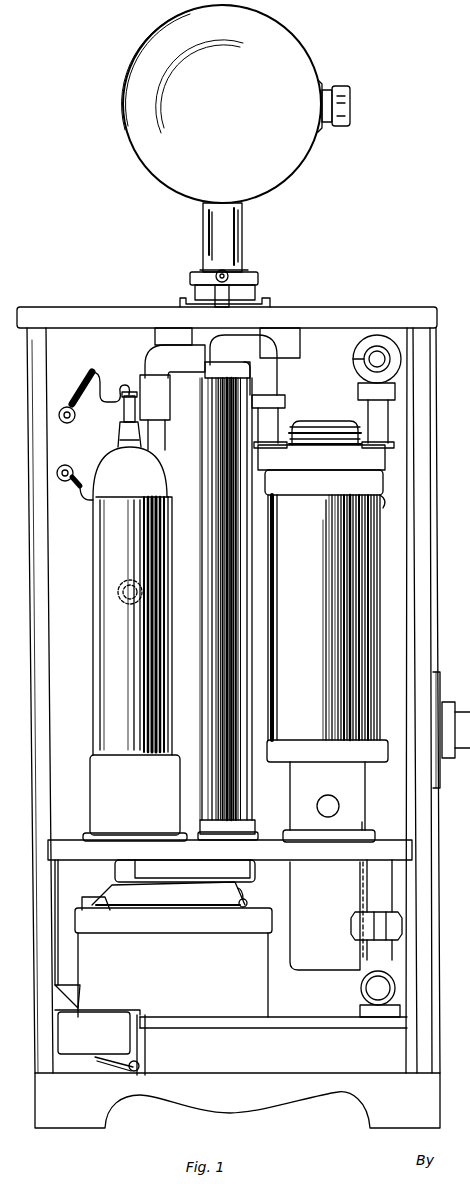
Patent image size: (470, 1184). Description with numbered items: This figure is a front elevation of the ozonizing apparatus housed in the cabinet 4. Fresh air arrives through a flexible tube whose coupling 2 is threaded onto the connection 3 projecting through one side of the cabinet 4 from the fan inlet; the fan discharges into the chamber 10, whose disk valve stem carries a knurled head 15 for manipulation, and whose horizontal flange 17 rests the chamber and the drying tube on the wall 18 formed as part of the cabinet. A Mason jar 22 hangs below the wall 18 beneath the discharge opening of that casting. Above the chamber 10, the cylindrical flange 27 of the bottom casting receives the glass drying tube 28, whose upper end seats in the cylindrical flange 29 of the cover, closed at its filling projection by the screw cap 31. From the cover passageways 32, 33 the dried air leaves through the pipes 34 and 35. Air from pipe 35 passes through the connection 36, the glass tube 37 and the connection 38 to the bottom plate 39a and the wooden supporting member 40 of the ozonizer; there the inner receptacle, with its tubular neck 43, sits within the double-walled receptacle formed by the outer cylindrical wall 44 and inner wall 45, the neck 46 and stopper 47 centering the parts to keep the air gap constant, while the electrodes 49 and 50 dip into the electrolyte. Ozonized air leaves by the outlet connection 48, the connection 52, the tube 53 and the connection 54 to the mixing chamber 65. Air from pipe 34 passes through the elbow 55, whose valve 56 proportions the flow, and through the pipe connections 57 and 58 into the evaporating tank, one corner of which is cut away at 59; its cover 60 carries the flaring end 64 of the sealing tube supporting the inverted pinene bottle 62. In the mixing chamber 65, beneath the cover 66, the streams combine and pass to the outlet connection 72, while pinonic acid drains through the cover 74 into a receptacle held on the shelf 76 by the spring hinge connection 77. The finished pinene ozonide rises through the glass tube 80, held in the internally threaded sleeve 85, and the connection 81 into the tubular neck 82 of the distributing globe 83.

The coupling 2 is at (456, 740).
The connection 3 is at (440, 692).
The cabinet 4 is at (436, 813).
The chamber 10 is at (329, 802).
The knurled head 15 is at (324, 804).
The horizontal flange 17 is at (361, 830).
The wall 18 is at (385, 840).
The Mason jar 22 is at (326, 916).
The cylindrical flange 27 is at (327, 751).
The drying tube 28 is at (324, 617).
The cylindrical flange 29 is at (390, 504).
The screw cap 31 is at (348, 420).
The passageway 32 is at (384, 462).
The passageway 33 is at (292, 468).
The pipe 34 is at (389, 418).
The pipe 35 is at (278, 418).
The connection 36 is at (262, 340).
The glass tube 37 is at (226, 529).
The connection 38 is at (158, 872).
The bottom plate 39a is at (153, 840).
The cylindrical supporting member 40 is at (135, 798).
The tubular neck 43 is at (136, 406).
The outer cylindrical wall 44 is at (99, 592).
The inner wall 45 is at (132, 601).
The neck 46 is at (118, 432).
The stopper 47 is at (135, 418).
The outlet connection 48 is at (166, 443).
The electrode 49 is at (102, 398).
The electrode 50 is at (78, 496).
The connection 52 is at (148, 362).
The tube 53 is at (213, 580).
The connection 54 is at (168, 893).
The elbow 55 is at (395, 390).
The valve 56 is at (385, 357).
The pipe connection 57 is at (385, 882).
The pipe connection 58 is at (396, 1000).
The corner recess 59 is at (45, 1078).
The cover 60 is at (293, 1017).
The pinene container bottle 62 is at (78, 955).
The flaring end 64 is at (78, 997).
The mixing chamber 65 is at (173, 957).
The cover 66 is at (248, 901).
The outlet connection 72 is at (243, 908).
The cover 74 is at (100, 1012).
The shelf 76 is at (72, 1066).
The spring hinge connection 77 is at (140, 1064).
The glass tube 80 is at (202, 480).
The connection 81 is at (247, 270).
The tubular neck 82 is at (243, 242).
The distributing globe 83 is at (235, 104).
The internally threaded sleeve 85 is at (255, 290).